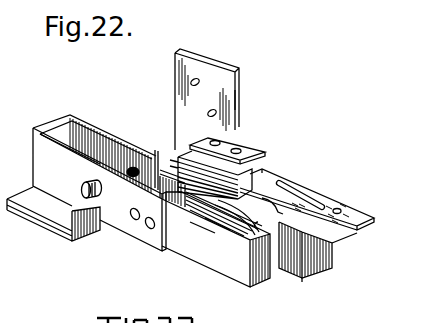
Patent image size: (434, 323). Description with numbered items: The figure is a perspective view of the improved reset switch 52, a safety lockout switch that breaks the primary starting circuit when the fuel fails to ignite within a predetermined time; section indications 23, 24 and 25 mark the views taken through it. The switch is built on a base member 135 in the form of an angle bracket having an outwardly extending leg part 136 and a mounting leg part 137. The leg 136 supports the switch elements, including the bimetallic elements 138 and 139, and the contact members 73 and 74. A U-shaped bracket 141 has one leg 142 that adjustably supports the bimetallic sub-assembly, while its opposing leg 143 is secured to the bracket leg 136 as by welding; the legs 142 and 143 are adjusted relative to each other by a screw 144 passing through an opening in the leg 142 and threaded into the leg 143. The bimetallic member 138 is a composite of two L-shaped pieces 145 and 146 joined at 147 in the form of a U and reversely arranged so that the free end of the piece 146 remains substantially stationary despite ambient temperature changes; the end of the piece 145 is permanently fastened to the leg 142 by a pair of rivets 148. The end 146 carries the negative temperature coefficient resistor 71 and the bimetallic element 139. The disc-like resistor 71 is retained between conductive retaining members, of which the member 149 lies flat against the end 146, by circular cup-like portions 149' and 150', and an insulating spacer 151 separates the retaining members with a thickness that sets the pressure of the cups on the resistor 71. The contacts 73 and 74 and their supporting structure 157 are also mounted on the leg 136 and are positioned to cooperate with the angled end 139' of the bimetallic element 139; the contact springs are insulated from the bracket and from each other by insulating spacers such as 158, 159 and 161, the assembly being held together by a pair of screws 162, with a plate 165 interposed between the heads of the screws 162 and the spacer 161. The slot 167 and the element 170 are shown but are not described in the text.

The U-shaped bracket 141 is at (53, 116).
The leg of U-shaped bracket 142 is at (67, 153).
The opposing leg of U-shaped bracket 143 is at (109, 142).
The screw 144 is at (82, 185).
The rivets 148 is at (149, 227).
The outwardly extending leg part 136 is at (55, 221).
The mounting leg part 137 is at (221, 78).
The base member 135 is at (239, 89).
The plate 165 is at (204, 141).
The screws 162 is at (216, 141).
The insulating spacer 161 is at (238, 149).
The insulating spacer 158 is at (181, 148).
The supporting structure 157 is at (178, 164).
The contact member 73 is at (359, 229).
The slot 167 is at (322, 204).
The contact member 74 is at (334, 213).
The insulating spacer 159 is at (264, 171).
The reset switch 52 is at (280, 149).
The cup-like portion 150' is at (263, 205).
The bimetallic element 139 is at (336, 251).
The block top edge 170 is at (336, 253).
The angled end 139' is at (286, 290).
The bimetallic member 138 is at (268, 284).
The joint 147 is at (258, 282).
The L-shaped bimetallic piece 145 is at (215, 262).
The L-shaped bimetallic piece 146 is at (206, 238).
The retaining member 149 is at (215, 216).
The insulating spacer 151 is at (208, 220).
The negative temperature coefficient resistor 71 is at (224, 228).
The cup-like portion 149' is at (241, 235).
The section line 23 is at (118, 112).
The section line 24 is at (17, 118).
The section line 25 is at (407, 189).